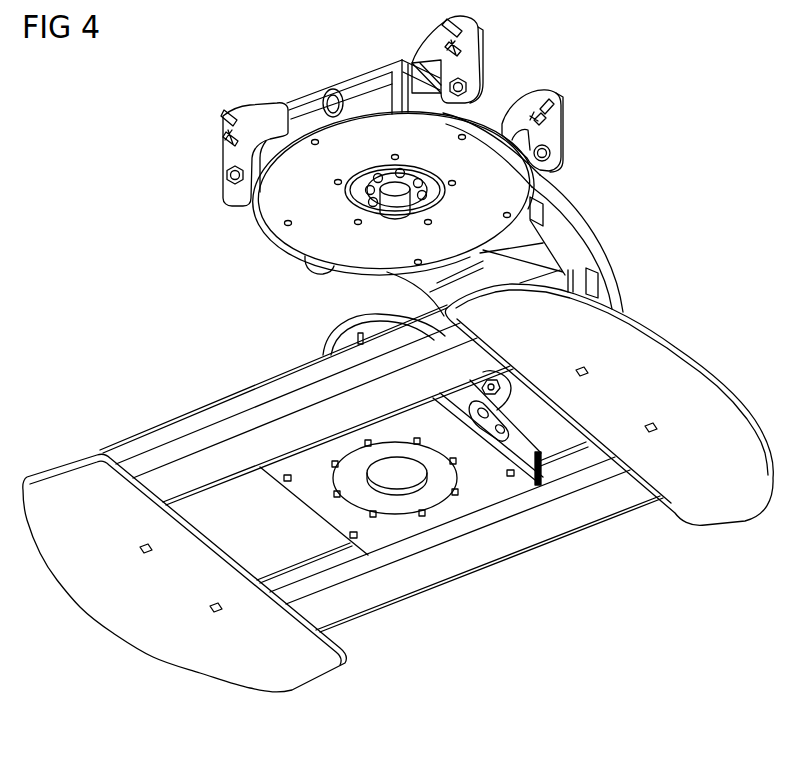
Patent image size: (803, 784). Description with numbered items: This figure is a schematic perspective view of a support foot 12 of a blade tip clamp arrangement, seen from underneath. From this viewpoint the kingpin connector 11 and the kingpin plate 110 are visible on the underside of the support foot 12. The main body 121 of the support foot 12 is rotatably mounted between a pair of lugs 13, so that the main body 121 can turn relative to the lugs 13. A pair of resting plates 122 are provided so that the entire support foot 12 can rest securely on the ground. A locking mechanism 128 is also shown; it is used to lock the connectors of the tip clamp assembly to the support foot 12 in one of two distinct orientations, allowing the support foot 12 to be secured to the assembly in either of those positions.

The support foot 12 is at (703, 172).
The kingpin plate 110 is at (307, 243).
The kingpin connector 11 is at (368, 199).
The locking mechanism 128 is at (252, 112).
The main body 121 is at (583, 250).
The lugs 13 is at (187, 430).
The resting plates 122 is at (307, 675).